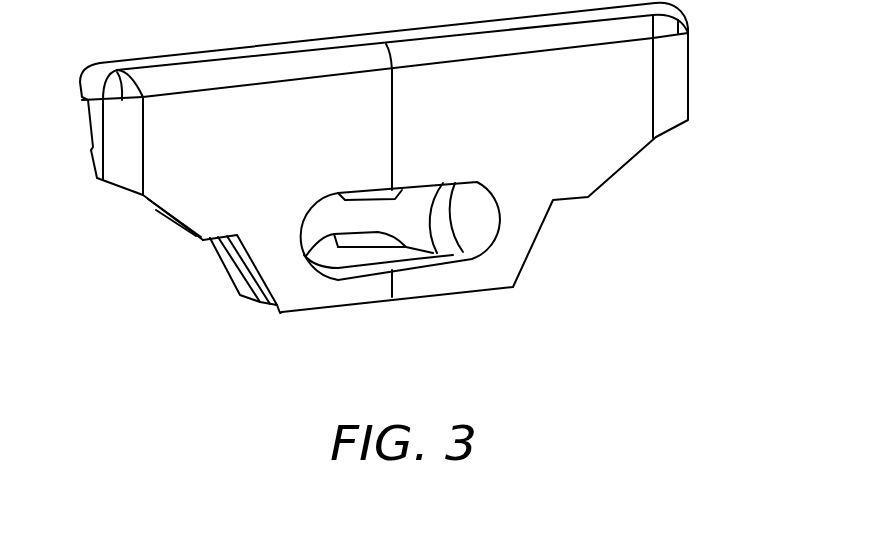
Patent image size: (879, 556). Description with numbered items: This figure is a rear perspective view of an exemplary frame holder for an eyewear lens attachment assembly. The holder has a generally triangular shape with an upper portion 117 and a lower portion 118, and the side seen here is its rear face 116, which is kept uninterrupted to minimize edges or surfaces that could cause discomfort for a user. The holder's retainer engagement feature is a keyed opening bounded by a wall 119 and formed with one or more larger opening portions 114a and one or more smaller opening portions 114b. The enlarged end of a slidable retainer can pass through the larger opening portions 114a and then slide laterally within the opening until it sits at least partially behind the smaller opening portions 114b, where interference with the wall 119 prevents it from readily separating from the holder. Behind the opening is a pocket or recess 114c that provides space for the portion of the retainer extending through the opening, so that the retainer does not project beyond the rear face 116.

The larger opening portion 114a is at (422, 212).
The smaller opening portion 114b is at (357, 217).
The pocket or recess 114c is at (488, 237).
The rear face 116 is at (602, 130).
The upper portion 117 is at (688, 68).
The lower portion 118 is at (253, 270).
The wall 119 is at (472, 202).